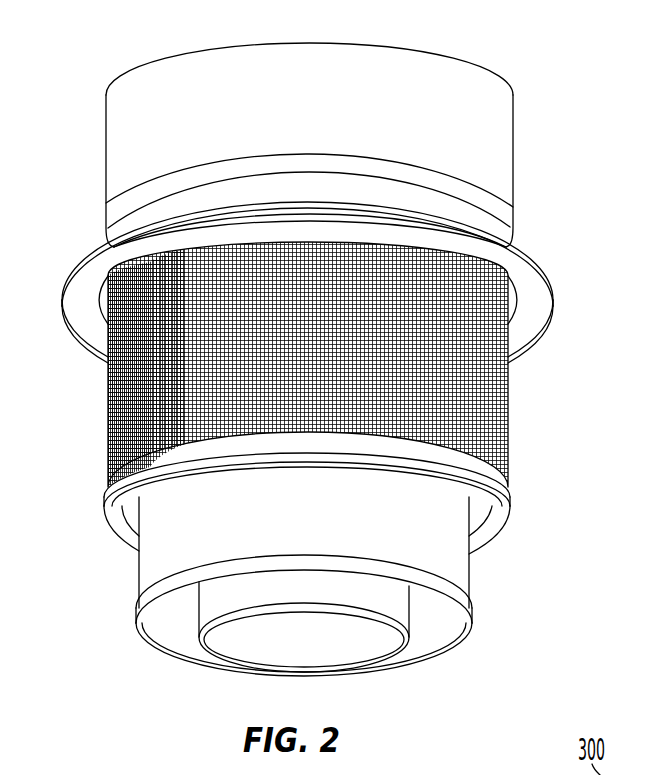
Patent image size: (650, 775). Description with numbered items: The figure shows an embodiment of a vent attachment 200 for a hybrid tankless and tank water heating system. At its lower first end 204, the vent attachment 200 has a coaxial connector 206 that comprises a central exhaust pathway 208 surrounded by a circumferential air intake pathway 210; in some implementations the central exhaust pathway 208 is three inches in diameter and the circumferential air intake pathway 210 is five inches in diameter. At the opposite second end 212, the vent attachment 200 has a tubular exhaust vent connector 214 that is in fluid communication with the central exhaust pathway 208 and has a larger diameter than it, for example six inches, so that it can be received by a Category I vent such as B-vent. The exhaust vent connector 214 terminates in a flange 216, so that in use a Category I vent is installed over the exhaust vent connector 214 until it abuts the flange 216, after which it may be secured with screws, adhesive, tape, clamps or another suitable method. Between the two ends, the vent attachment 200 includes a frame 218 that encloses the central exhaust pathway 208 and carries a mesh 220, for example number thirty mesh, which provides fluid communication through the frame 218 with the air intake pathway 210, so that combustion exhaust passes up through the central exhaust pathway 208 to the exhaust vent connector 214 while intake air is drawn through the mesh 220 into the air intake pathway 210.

The vent attachment 200 is at (549, 76).
The first end 204 is at (567, 552).
The coaxial connector 206 is at (200, 650).
The central exhaust pathway 208 is at (420, 398).
The circumferential air intake pathway 210 is at (176, 626).
The second end 212 is at (567, 83).
The exhaust vent connector 214 is at (112, 110).
The flange 216 is at (114, 203).
The frame 218 is at (567, 263).
The mesh 220 is at (110, 414).